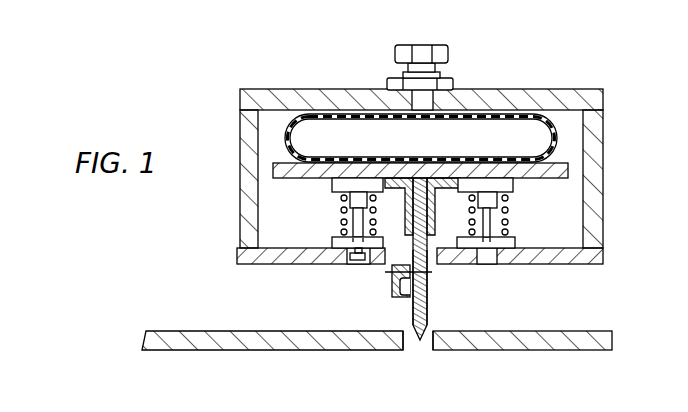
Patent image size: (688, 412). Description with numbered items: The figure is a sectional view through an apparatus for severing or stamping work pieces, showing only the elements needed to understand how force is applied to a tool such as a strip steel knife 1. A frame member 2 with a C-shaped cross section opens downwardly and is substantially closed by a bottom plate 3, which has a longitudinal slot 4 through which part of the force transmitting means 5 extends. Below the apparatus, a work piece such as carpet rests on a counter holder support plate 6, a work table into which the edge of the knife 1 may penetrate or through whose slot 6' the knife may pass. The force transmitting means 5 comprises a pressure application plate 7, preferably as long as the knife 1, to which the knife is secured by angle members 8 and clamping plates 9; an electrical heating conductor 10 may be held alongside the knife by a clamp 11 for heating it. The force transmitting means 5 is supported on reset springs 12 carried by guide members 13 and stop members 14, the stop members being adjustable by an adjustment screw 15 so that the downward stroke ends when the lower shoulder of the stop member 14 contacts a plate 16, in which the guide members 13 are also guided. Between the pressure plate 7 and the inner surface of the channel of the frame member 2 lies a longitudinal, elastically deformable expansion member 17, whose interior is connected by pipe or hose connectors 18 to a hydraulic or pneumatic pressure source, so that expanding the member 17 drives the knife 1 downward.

The strip steel knife 1 is at (423, 320).
The frame member 2 is at (250, 133).
The bottom plate 3 is at (262, 256).
The longitudinal slot 4 is at (428, 260).
The force transmitting means 5 is at (440, 203).
The counter holder support plate 6 is at (377, 328).
The slot 6' is at (418, 356).
The pressure application plate 7 is at (560, 166).
The angle members 8 is at (407, 210).
The clamping plates 9 is at (428, 288).
The electrical heating conductor 10 is at (406, 293).
The clamp 11 is at (393, 282).
The reset springs 12 is at (508, 213).
The guide members 13 is at (492, 230).
The stop members 14 is at (352, 200).
The adjustment screw 15 is at (358, 262).
The plate 16 is at (340, 244).
The expansion member 17 is at (305, 118).
The pipe or hose connectors 18 is at (446, 57).